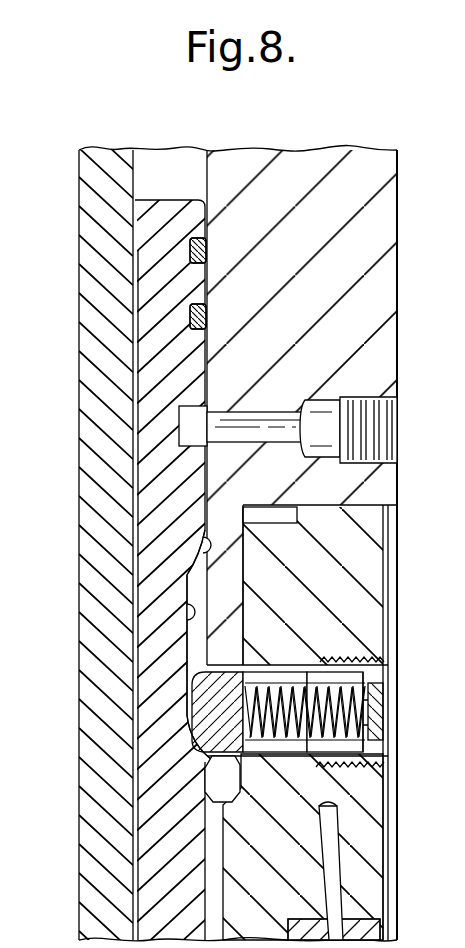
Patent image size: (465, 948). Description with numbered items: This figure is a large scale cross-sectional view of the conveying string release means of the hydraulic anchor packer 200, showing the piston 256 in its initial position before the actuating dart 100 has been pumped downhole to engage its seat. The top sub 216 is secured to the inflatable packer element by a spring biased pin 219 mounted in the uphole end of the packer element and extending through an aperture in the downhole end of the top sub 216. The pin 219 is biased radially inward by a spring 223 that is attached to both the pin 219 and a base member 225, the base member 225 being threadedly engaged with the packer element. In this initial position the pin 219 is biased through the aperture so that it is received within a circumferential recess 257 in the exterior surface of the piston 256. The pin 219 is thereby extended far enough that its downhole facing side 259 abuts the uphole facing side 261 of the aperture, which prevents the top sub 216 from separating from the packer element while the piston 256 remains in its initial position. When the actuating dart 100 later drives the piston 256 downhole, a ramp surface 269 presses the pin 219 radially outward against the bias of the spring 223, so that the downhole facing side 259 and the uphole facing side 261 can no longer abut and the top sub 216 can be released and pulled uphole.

The actuating dart 100 is at (73, 270).
The hydraulic anchor packer 200 is at (271, 131).
The top sub 216 is at (380, 230).
The spring biased pin 219 is at (200, 712).
The spring 223 is at (322, 688).
The base member 225 is at (380, 755).
The piston 256 is at (150, 210).
The circumferential recess 257 is at (195, 612).
The downhole facing side 259 is at (207, 767).
The uphole facing side 261 is at (183, 718).
The ramp surface 269 is at (210, 545).